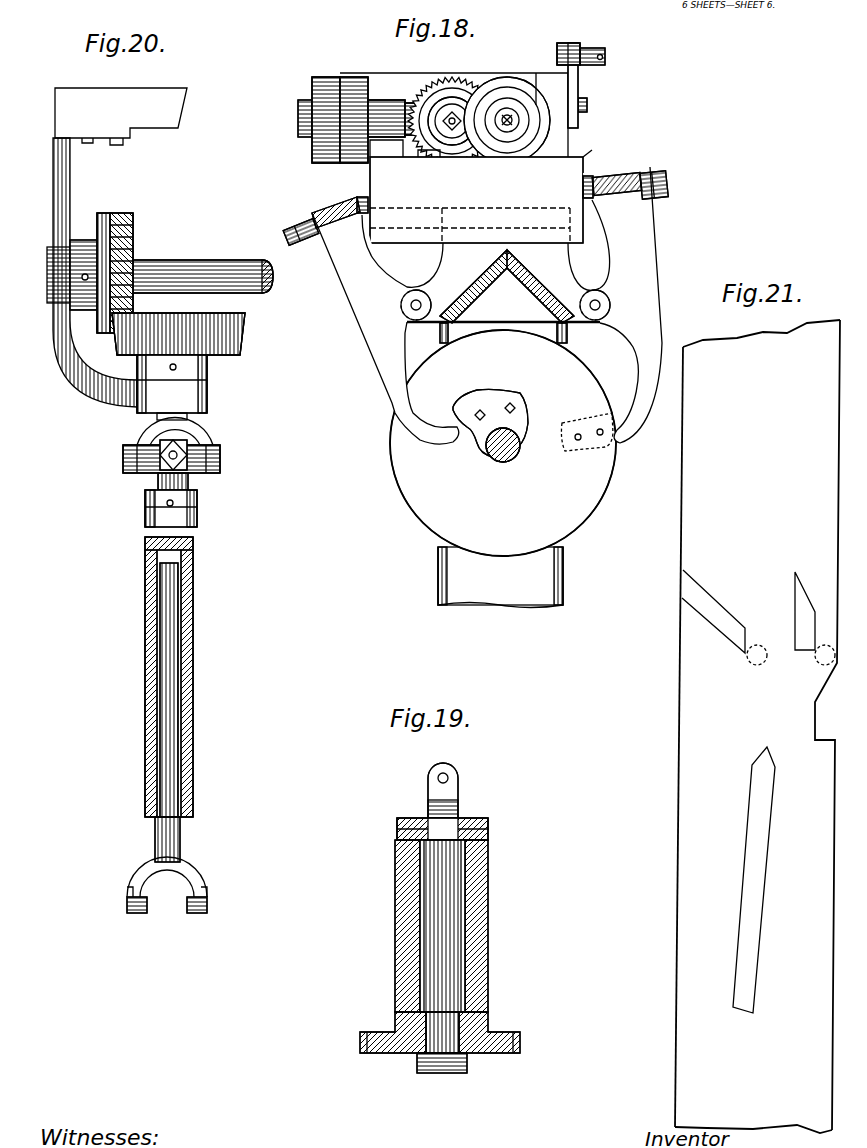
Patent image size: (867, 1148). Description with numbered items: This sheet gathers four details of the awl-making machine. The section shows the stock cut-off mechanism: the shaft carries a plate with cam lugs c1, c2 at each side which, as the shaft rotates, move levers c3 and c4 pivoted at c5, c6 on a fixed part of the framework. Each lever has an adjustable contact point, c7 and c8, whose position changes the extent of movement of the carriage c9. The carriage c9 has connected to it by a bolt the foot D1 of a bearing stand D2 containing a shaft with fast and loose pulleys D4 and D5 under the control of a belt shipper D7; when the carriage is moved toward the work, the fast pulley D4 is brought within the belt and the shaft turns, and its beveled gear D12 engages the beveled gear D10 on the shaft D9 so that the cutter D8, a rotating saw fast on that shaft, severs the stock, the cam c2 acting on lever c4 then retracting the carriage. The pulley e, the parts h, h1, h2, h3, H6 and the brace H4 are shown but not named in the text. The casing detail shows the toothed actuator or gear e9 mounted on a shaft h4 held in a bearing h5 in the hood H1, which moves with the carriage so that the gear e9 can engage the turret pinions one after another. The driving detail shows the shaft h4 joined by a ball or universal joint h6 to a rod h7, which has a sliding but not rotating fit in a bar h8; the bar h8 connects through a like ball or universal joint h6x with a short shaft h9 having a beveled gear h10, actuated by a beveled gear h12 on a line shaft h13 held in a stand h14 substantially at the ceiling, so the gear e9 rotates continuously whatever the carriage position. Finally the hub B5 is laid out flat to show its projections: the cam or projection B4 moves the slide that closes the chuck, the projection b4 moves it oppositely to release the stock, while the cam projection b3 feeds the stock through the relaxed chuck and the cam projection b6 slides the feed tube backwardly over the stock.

In FIG. 20, the stand h14 is at (72, 222).
In FIG. 20, the line shaft h13 is at (178, 263).
In FIG. 20, the beveled gear h12 is at (131, 244).
In FIG. 20, the beveled gear h10 is at (224, 326).
In FIG. 20, the short shaft h9 is at (203, 419).
In FIG. 20, the ball or universal joint h6x is at (127, 477).
In FIG. 20, the bar h8 is at (181, 733).
In FIG. 20, the rod h7 is at (178, 851).
In FIG. 20, the ball or universal joint h6 is at (203, 879).
In FIG. 19, the ball or universal joint h6 is at (457, 795).
In FIG. 18, the belt shipper D7 is at (380, 77).
In FIG. 18, the hood H1 is at (608, 171).
In FIG. 18, the fast pulley D4 is at (322, 78).
In FIG. 18, the loose pulley D5 is at (352, 78).
In FIG. 18, the bearing stand D2 is at (399, 110).
In FIG. 18, the beveled gear D10 is at (458, 100).
In FIG. 18, the cutter D8 is at (483, 146).
In FIG. 18, the beveled gear D12 is at (435, 100).
In FIG. 18, the shaft D9 is at (453, 128).
In FIG. 18, the pulley e is at (513, 115).
In FIG. 18, the frame member H6 is at (558, 110).
In FIG. 18, the lug h3 is at (548, 123).
In FIG. 18, the plate h2 is at (561, 48).
In FIG. 18, the block h is at (582, 49).
In FIG. 18, the screw h1 is at (598, 57).
In FIG. 18, the carriage c9 is at (562, 143).
In FIG. 18, the foot D1 is at (407, 152).
In FIG. 18, the V-shaped brace H4 is at (507, 286).
In FIG. 18, the lever c3 is at (372, 362).
In FIG. 18, the adjustable contact point c7 is at (360, 182).
In FIG. 18, the lever c4 is at (658, 358).
In FIG. 18, the adjustable contact point c8 is at (607, 175).
In FIG. 18, the pivot c5 is at (413, 306).
In FIG. 18, the pivot c6 is at (597, 305).
In FIG. 18, the cam lug c1 is at (483, 398).
In FIG. 18, the cam lug c2 is at (577, 427).
In FIG. 19, the bearing h5 is at (484, 884).
In FIG. 19, the shaft h4 is at (432, 950).
In FIG. 19, the toothed actuator or gear e9 is at (508, 1034).
In FIG. 21, the hub B5 is at (690, 688).
In FIG. 21, the cam or projection B4 is at (825, 718).
In FIG. 21, the cam projection b3 is at (698, 610).
In FIG. 21, the projection b4 is at (800, 593).
In FIG. 21, the cam projection b6 is at (750, 848).